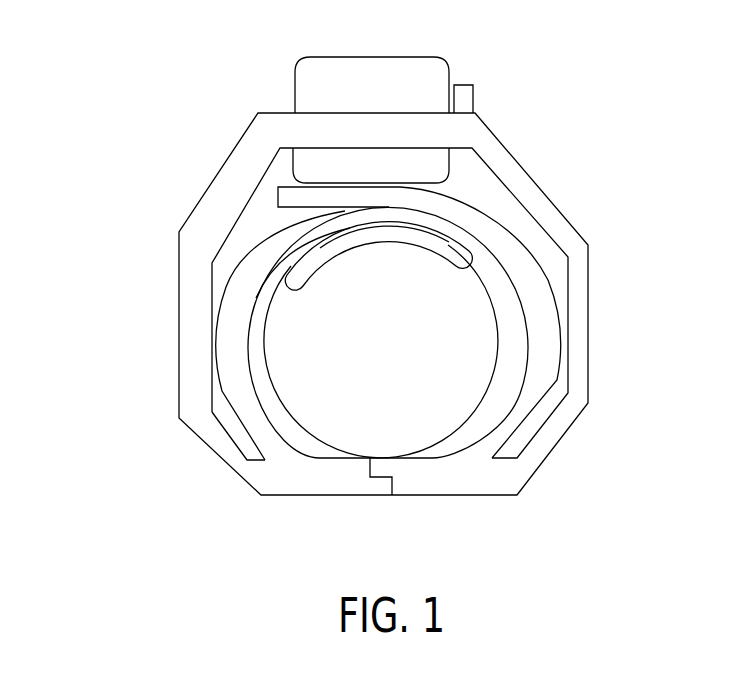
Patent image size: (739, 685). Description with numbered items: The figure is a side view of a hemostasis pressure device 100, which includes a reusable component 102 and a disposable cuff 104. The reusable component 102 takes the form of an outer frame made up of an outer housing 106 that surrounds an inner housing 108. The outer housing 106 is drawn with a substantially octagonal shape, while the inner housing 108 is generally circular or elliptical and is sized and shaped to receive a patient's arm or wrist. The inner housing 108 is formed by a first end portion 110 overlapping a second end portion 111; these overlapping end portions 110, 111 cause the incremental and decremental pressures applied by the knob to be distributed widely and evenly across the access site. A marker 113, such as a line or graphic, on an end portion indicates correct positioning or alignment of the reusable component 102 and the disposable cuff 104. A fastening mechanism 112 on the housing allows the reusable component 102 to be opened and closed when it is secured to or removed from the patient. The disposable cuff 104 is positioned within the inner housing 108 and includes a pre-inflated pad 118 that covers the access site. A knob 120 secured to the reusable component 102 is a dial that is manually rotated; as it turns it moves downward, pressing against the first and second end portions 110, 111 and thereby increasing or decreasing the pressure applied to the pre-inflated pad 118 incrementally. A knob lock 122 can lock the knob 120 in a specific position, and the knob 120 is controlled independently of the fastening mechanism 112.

The hemostasis pressure device 100 is at (336, 287).
The reusable component 102 is at (590, 212).
The disposable cuff 104 is at (490, 335).
The outer housing 106 is at (577, 275).
The inner housing 108 is at (222, 355).
The first end portion 110 is at (288, 197).
The second end portion 111 is at (452, 220).
The fastening mechanism 112 is at (345, 482).
The marker 113 is at (288, 250).
The pre-inflated pad 118 is at (286, 289).
The knob 120 is at (295, 83).
The knob lock 122 is at (462, 86).